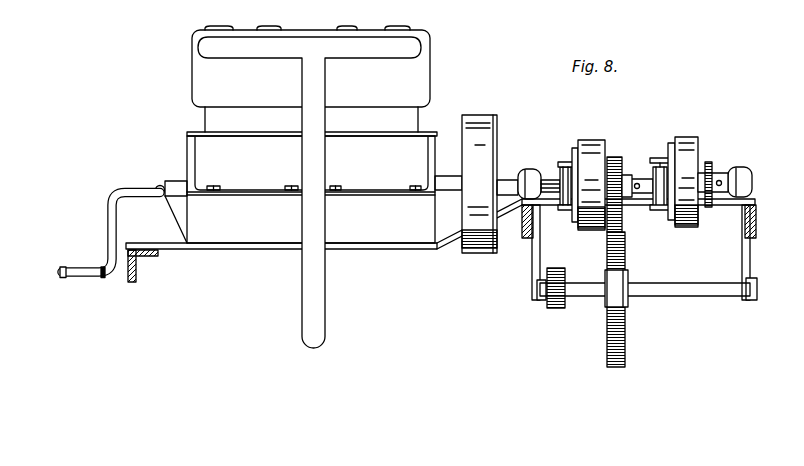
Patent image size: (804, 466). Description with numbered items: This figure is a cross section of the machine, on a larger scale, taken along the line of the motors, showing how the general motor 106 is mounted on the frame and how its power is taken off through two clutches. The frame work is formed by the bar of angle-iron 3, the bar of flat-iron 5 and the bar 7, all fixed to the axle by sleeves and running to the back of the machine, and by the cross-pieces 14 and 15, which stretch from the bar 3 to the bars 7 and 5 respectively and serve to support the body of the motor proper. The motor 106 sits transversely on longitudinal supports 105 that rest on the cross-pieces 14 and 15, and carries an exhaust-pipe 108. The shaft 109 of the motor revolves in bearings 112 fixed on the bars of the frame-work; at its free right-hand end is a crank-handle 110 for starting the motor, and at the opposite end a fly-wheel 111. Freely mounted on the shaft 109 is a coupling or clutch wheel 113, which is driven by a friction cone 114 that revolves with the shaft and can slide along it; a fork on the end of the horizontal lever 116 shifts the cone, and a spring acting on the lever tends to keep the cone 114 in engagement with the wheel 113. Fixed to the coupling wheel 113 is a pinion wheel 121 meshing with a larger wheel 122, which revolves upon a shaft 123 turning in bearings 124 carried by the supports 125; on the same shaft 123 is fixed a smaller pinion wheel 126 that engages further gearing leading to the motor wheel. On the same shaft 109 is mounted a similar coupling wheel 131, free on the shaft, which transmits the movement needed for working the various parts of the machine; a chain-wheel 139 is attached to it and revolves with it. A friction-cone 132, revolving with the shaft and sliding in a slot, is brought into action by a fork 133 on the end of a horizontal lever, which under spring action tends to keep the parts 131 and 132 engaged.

The bar of angle-iron 3 is at (137, 268).
The bar of flat-iron 5 is at (522, 238).
The bar 7 is at (757, 212).
The cross-piece 14 is at (732, 204).
The cross-piece 15 is at (233, 252).
The longitudinal supports 105 is at (301, 187).
The motor 106 is at (311, 79).
The exhaust-pipe 108 is at (317, 307).
The shaft of the motor 109 is at (505, 179).
The crank-handle 110 is at (112, 219).
The fly-wheel 111 is at (494, 116).
The bearings 112 is at (531, 168).
The coupling or clutch wheel 113 is at (596, 140).
The friction cone 114 is at (575, 148).
The horizontal lever 116 is at (562, 162).
The pinion wheel 121 is at (612, 157).
The larger wheel 122 is at (627, 338).
The shaft 123 is at (706, 292).
The bearings 124 is at (541, 300).
The supports 125 is at (533, 270).
The pinion wheel 126 is at (551, 308).
The coupling wheel 131 is at (690, 139).
The friction-cone 132 is at (672, 148).
The fork 133 is at (657, 166).
The chain-wheel 139 is at (712, 168).